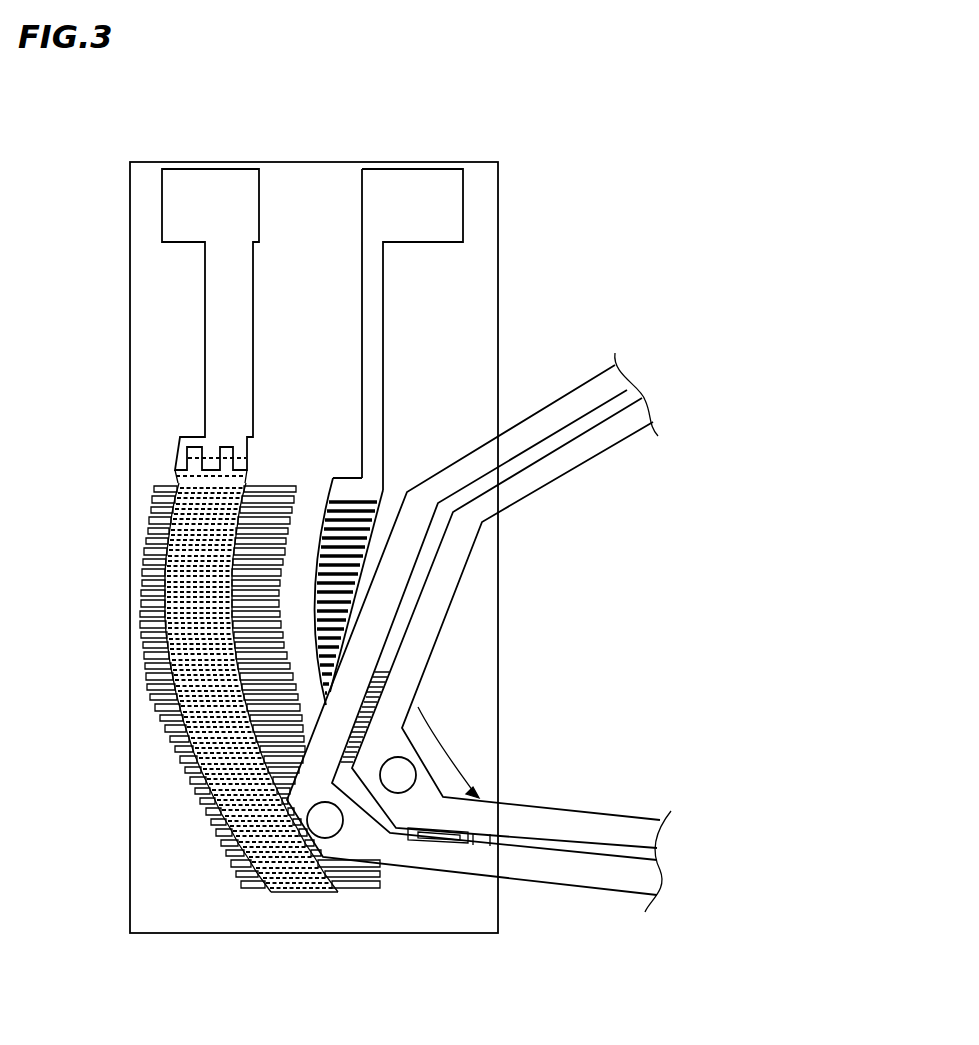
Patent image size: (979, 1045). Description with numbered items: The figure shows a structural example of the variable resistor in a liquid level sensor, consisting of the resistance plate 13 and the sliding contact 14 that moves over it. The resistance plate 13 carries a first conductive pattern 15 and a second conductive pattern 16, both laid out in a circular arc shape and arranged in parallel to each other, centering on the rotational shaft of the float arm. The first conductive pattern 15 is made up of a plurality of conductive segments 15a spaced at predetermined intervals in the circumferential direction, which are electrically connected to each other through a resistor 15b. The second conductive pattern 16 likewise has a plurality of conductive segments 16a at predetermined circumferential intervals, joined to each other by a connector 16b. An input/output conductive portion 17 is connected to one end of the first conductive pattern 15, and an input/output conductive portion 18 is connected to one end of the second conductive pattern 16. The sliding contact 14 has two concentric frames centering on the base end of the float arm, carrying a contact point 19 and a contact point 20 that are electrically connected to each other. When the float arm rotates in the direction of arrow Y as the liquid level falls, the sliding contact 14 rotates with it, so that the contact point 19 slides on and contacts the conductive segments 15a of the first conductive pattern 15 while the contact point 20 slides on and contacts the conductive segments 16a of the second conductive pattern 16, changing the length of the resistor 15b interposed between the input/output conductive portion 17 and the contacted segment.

The resistance plate 13 is at (130, 931).
The sliding contact 14 is at (412, 673).
The first conductive pattern 15 is at (358, 890).
The conductive segments 15a is at (158, 770).
The resistor 15b is at (293, 894).
The second conductive pattern 16 is at (373, 494).
The conductive segments 16a is at (345, 570).
The connector 16b is at (377, 678).
The input/output conductive portion 17 is at (236, 185).
The input/output conductive portion 18 is at (441, 185).
The contact point 19 is at (333, 820).
The contact point 20 is at (402, 774).